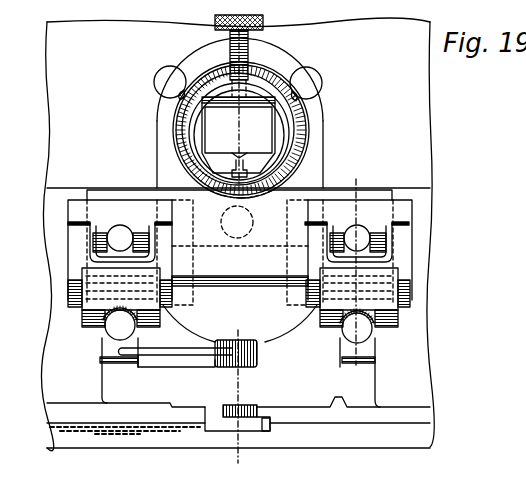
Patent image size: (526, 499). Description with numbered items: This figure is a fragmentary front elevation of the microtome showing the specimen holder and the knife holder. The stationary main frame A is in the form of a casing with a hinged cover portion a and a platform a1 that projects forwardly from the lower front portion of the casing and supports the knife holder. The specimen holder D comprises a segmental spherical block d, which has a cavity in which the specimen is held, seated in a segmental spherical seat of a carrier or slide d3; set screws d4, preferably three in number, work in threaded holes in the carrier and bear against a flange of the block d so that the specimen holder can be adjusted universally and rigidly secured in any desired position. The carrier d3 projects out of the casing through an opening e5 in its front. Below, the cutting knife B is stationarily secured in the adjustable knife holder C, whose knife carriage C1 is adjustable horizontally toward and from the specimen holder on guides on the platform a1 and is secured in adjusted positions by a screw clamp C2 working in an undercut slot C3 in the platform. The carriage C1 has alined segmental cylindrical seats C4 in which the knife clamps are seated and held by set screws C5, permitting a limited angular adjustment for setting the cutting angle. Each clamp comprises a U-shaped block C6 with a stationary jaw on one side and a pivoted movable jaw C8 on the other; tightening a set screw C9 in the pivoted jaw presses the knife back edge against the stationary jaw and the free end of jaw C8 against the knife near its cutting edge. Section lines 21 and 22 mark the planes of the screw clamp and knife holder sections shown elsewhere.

The hinged cover portion a is at (237, 234).
The platform a1 is at (401, 430).
The stationary main frame A is at (238, 135).
The opening e5 is at (158, 167).
The carrier or slide d3 is at (270, 73).
The specimen holder D is at (303, 128).
The segmental spherical block d is at (281, 146).
The set screws d4 is at (163, 80).
The cutting knife or blade B is at (240, 246).
The set screw C9 is at (118, 233).
The movable jaw C8 is at (239, 228).
The U-shaped block C6 is at (70, 290).
The segmental cylindrical seats or sockets C4 is at (84, 317).
The set screws C5 is at (110, 329).
The section line 22— 22 is at (381, 358).
The knife holder C is at (331, 402).
The knife carriage C1 is at (138, 403).
The section line 21— 21 is at (236, 398).
The screw clamp C2 is at (217, 438).
The undercut slot C3 is at (266, 434).